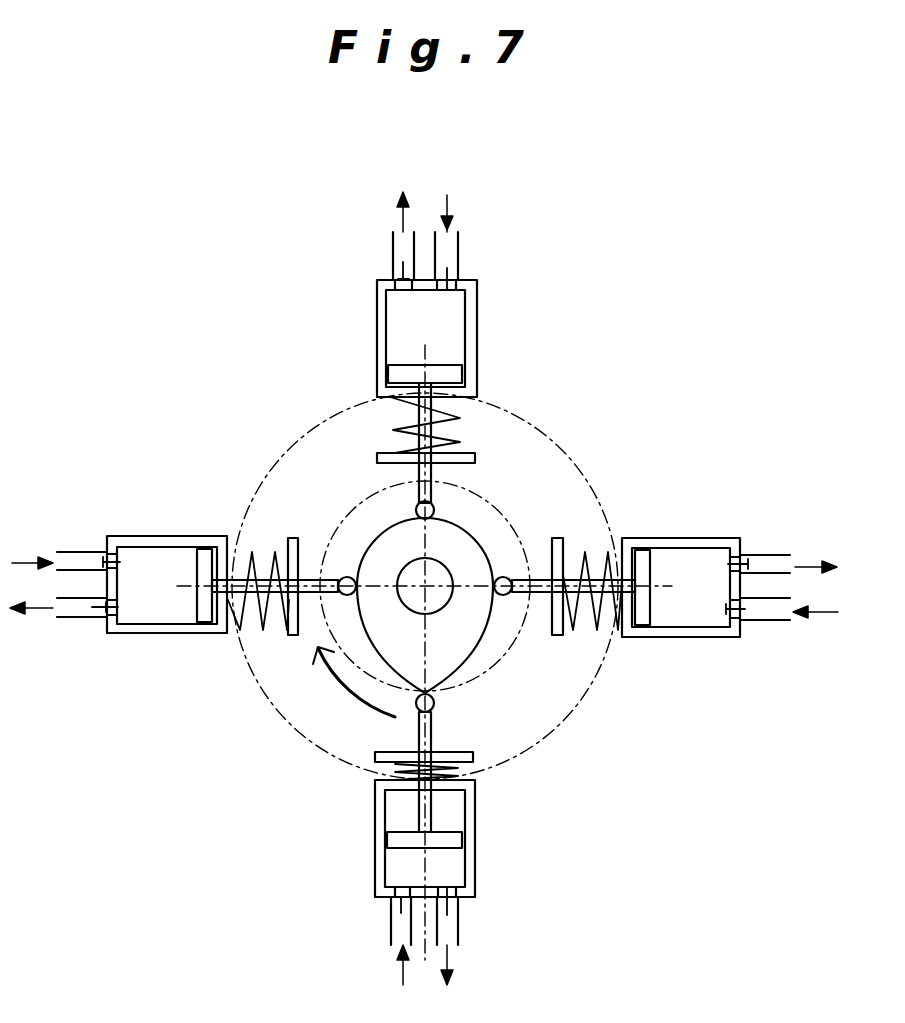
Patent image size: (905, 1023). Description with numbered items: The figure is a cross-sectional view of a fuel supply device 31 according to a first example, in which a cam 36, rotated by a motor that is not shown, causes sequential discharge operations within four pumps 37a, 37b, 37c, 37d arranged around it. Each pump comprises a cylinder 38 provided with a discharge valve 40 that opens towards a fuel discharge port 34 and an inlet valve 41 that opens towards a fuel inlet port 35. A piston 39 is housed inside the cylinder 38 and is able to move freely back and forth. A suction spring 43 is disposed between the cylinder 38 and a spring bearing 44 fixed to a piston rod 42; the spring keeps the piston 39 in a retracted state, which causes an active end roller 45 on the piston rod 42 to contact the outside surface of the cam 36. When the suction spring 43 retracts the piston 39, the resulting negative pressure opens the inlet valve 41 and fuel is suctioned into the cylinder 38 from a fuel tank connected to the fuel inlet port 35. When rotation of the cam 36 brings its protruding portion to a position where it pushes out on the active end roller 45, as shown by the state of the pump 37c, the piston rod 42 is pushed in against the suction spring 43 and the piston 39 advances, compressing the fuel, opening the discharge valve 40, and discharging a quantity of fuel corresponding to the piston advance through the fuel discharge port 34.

The fuel supply device 31 is at (674, 366).
The fuel discharge port 34 is at (393, 247).
The fuel inlet port 35 is at (457, 245).
The cam 36 is at (472, 643).
The pump 37a is at (488, 342).
The pump 37b is at (684, 650).
The pump 37c is at (358, 843).
The pump 37d is at (220, 583).
The cylinder 38 is at (147, 636).
The piston 39 is at (200, 600).
The discharge valve 40 is at (97, 620).
The inlet valve 41 is at (118, 556).
The piston rod 42 is at (326, 585).
The suction spring 43 is at (262, 610).
The spring bearing 44 is at (296, 582).
The active end roller 45 is at (338, 596).